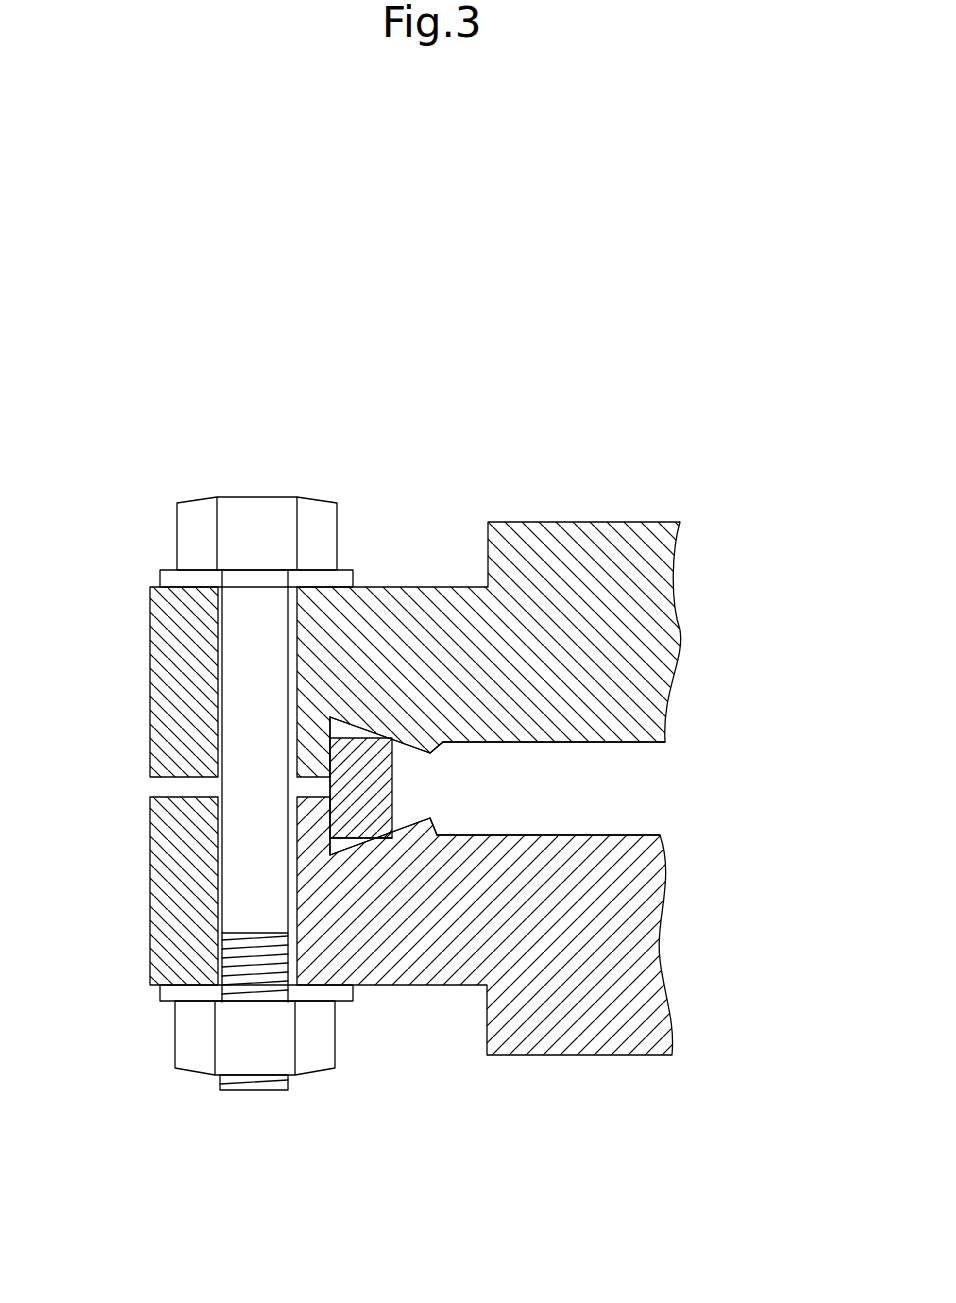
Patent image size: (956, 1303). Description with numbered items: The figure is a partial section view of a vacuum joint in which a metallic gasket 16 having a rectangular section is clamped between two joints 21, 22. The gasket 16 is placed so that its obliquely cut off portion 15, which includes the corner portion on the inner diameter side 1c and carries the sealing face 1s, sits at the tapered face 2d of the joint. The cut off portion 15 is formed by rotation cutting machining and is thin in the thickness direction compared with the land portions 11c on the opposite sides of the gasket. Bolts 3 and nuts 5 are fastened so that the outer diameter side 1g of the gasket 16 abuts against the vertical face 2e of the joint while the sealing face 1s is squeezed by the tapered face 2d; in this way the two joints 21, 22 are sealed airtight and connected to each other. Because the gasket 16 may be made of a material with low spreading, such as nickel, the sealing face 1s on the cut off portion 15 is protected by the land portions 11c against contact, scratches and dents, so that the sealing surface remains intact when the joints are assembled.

The bolt 3 is at (242, 497).
The nut 5 is at (173, 1037).
The joint 21 is at (545, 503).
The joint 22 is at (525, 1080).
The tapered face 2d is at (410, 757).
The vertical face 2e is at (330, 752).
The corner portion on the inner diameter side 1c is at (401, 904).
The sealing face 1s is at (390, 823).
The outer diameter side 1g is at (330, 767).
The land portion 11c is at (330, 825).
The cut off portion 15 is at (380, 860).
The metallic gasket 16 is at (463, 801).